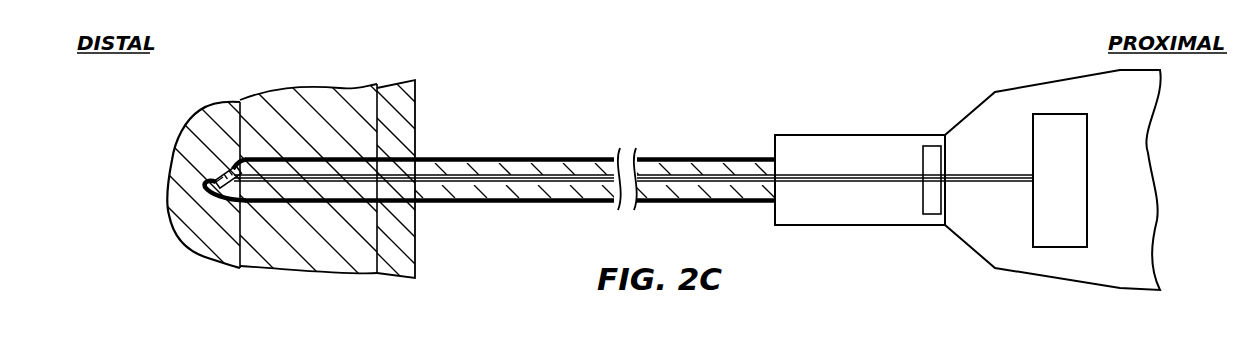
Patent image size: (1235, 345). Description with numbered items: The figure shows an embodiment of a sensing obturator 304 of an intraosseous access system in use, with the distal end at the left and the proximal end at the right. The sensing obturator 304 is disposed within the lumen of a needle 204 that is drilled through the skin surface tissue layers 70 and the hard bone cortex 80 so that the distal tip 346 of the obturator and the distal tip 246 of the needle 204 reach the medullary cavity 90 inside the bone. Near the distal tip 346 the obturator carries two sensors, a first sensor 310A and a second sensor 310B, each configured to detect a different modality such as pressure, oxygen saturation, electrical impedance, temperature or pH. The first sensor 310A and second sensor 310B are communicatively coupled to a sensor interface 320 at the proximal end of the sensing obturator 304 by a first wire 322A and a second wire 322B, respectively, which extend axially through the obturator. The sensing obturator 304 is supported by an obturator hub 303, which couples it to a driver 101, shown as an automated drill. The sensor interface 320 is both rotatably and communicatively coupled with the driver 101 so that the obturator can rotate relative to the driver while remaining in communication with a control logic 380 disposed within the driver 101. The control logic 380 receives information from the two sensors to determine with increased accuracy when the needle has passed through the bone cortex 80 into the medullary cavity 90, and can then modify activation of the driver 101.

The skin surface tissue layers 70 is at (387, 122).
The bone cortex 80 is at (297, 124).
The medullary cavity 90 is at (204, 141).
The driver 101 is at (984, 89).
The needle 204 is at (445, 207).
The distal tip of the needle 246 is at (200, 193).
The obturator hub 303 is at (819, 143).
The sensing obturator 304 is at (586, 167).
The first sensor 310A is at (234, 160).
The second sensor 310B is at (221, 173).
The sensor interface 320 is at (933, 155).
The first wire 322A is at (512, 177).
The second wire 322B is at (555, 184).
The distal tip of the obturator 346 is at (210, 182).
The control logic 380 is at (1068, 180).